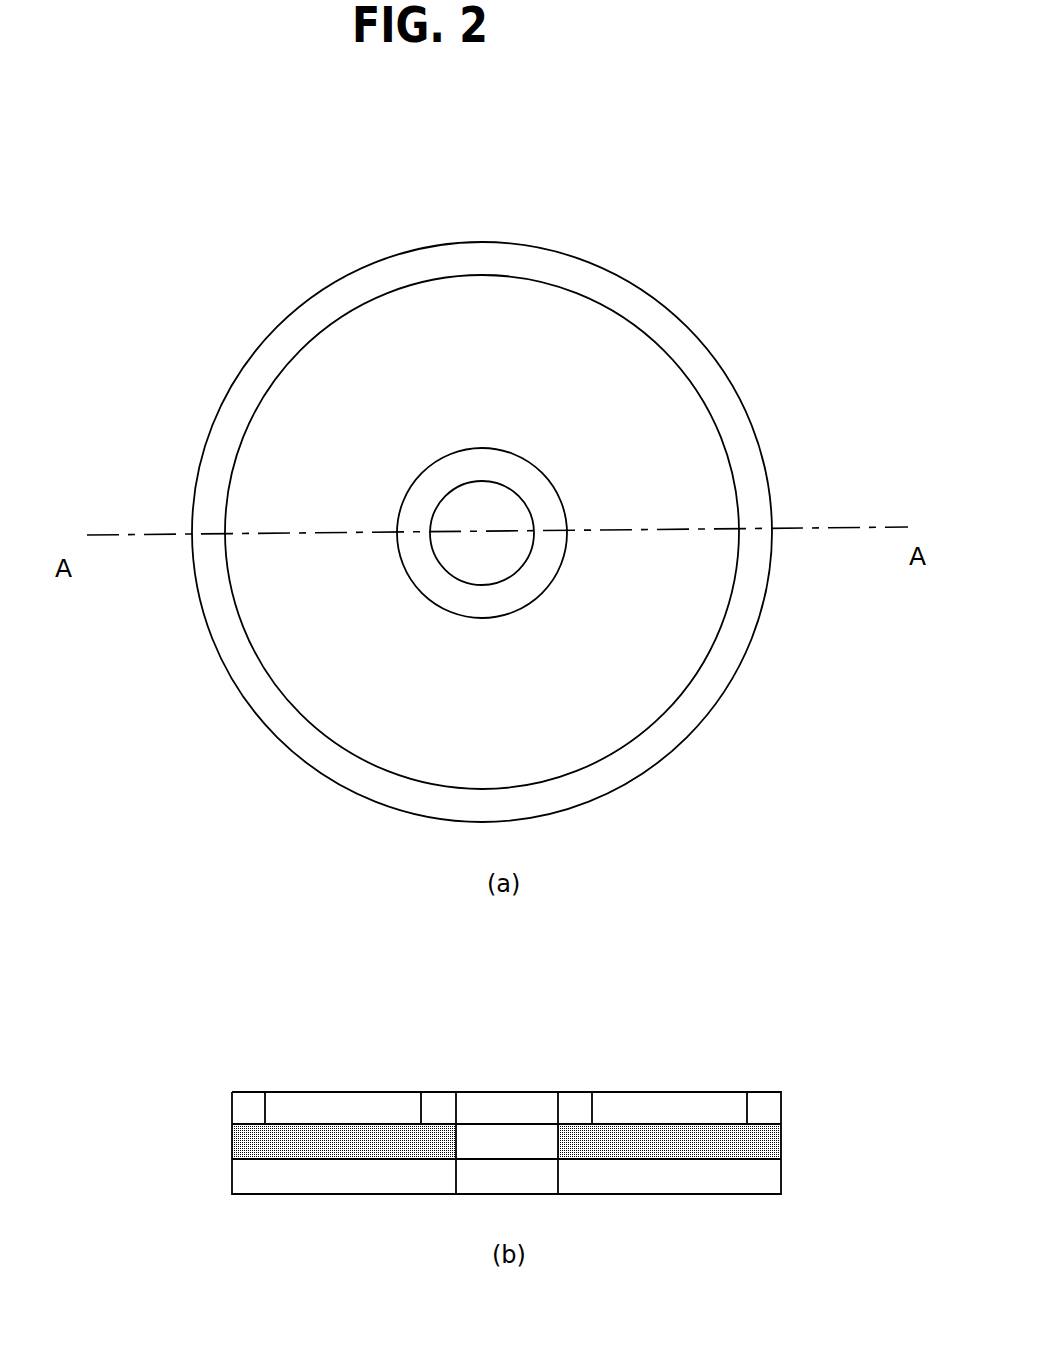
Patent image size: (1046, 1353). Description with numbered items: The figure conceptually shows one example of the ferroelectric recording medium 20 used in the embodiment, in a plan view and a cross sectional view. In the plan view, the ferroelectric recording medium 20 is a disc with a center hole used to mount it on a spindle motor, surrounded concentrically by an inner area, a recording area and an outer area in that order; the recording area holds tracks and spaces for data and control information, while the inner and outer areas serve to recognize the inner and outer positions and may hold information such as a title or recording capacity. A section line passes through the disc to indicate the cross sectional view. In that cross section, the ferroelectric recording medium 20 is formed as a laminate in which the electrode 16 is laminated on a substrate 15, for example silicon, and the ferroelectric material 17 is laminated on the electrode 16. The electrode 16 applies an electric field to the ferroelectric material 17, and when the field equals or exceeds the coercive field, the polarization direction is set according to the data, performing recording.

The ferroelectric recording medium 20 is at (533, 496).
The substrate 15 is at (782, 1167).
The electrode 16 is at (782, 1133).
The ferroelectric material 17 is at (782, 1100).